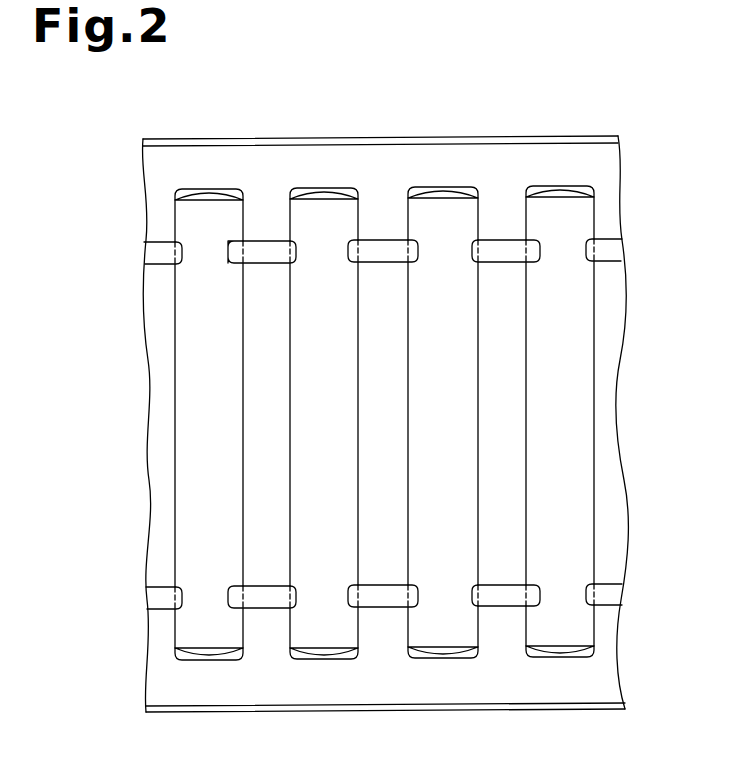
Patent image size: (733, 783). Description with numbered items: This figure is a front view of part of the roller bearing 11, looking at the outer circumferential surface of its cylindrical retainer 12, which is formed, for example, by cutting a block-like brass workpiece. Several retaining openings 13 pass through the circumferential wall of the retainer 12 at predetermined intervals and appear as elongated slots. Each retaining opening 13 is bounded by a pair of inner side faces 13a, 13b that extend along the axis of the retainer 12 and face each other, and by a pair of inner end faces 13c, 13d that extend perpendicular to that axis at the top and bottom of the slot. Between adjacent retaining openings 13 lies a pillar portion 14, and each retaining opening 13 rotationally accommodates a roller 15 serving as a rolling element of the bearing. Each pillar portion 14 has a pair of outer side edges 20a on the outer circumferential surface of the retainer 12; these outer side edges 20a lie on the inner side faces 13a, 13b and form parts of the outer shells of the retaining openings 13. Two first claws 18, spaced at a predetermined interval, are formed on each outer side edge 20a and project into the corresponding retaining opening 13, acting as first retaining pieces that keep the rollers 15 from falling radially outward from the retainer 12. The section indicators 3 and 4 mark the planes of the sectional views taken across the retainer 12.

The roller bearing 11 is at (260, 133).
The retainer 12 is at (456, 137).
The retaining opening 13 is at (235, 327).
The inner side face 13a is at (292, 500).
The inner side face 13b is at (356, 500).
The inner end face 13c is at (320, 199).
The inner end face 13d is at (322, 650).
The pillar portion 14 is at (280, 427).
The roller 15 is at (220, 462).
The first claw 18 is at (348, 250).
The outer side edge 20a is at (355, 357).
The section line III-III 3 is at (125, 253).
The section line IV-IV 4 is at (381, 135).